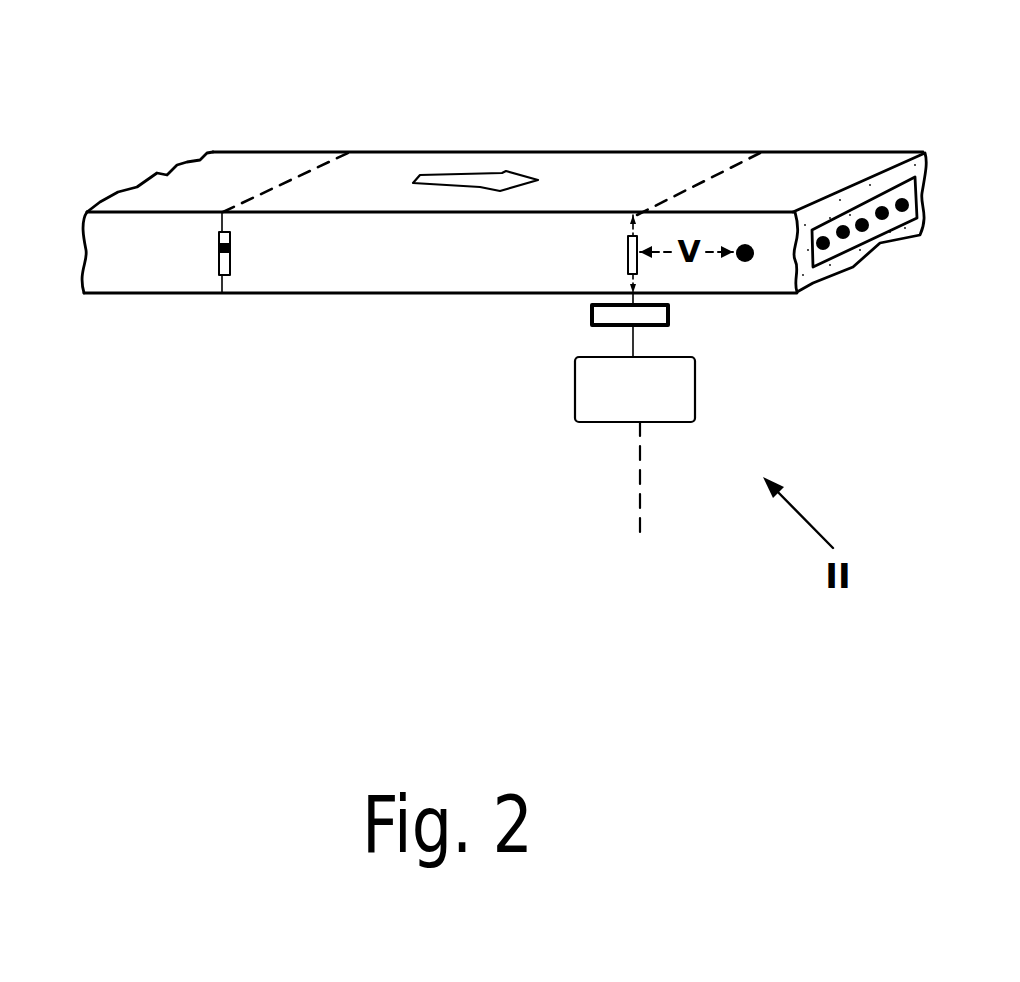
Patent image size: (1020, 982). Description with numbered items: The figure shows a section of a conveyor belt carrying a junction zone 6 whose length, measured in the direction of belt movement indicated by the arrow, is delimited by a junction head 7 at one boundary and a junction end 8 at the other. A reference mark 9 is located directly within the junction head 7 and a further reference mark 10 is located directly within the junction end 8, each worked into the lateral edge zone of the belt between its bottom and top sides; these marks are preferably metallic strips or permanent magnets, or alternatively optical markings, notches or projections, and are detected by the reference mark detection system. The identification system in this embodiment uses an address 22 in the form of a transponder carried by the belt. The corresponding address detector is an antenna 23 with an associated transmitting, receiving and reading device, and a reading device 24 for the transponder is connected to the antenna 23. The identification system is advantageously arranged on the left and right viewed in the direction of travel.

The junction zone 6 is at (602, 170).
The junction head 7 is at (288, 178).
The junction end 8 is at (700, 182).
The reference mark 9 is at (222, 283).
The reference mark 10 is at (628, 252).
The address 22 is at (750, 260).
The antenna 23 is at (673, 313).
The reading device 24 is at (618, 393).